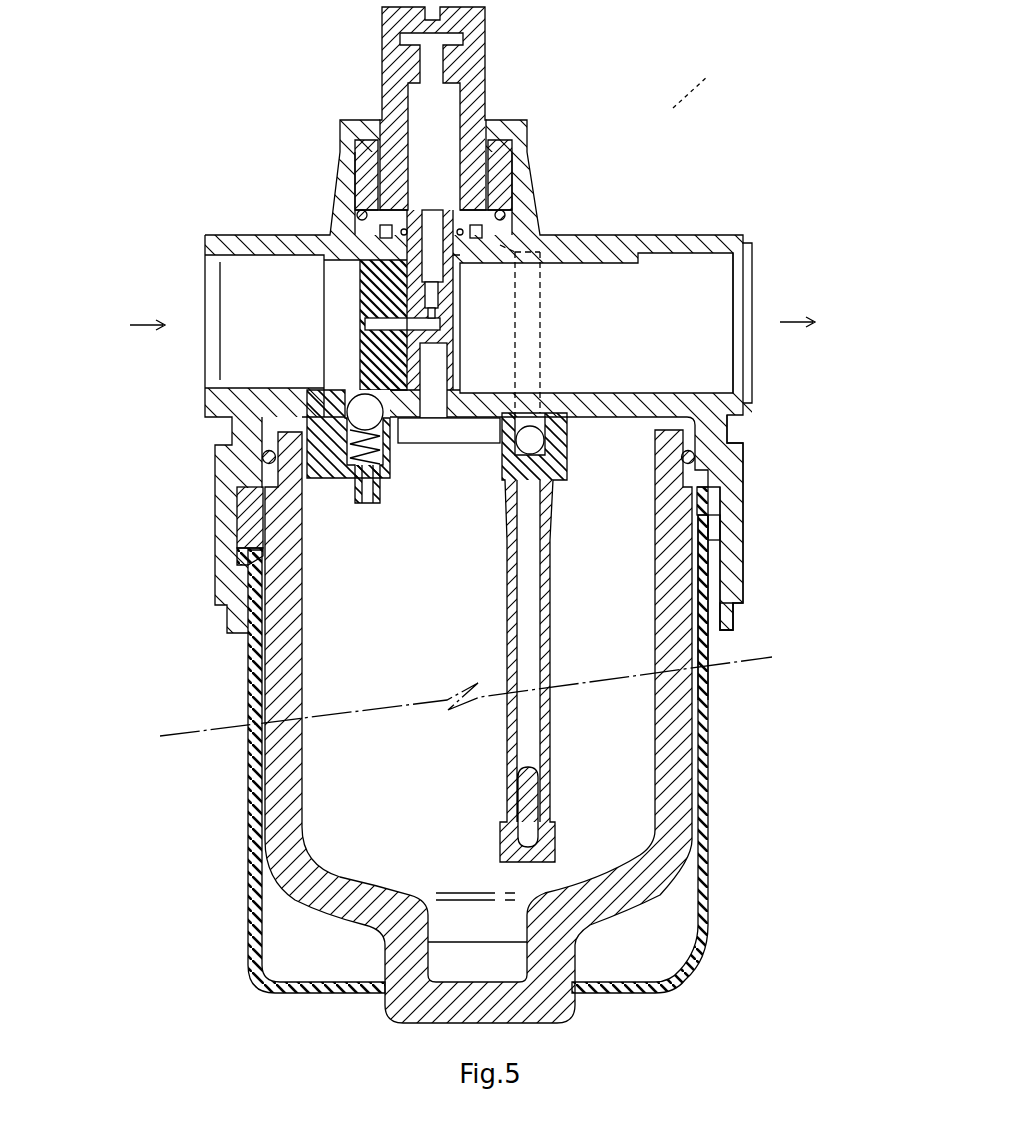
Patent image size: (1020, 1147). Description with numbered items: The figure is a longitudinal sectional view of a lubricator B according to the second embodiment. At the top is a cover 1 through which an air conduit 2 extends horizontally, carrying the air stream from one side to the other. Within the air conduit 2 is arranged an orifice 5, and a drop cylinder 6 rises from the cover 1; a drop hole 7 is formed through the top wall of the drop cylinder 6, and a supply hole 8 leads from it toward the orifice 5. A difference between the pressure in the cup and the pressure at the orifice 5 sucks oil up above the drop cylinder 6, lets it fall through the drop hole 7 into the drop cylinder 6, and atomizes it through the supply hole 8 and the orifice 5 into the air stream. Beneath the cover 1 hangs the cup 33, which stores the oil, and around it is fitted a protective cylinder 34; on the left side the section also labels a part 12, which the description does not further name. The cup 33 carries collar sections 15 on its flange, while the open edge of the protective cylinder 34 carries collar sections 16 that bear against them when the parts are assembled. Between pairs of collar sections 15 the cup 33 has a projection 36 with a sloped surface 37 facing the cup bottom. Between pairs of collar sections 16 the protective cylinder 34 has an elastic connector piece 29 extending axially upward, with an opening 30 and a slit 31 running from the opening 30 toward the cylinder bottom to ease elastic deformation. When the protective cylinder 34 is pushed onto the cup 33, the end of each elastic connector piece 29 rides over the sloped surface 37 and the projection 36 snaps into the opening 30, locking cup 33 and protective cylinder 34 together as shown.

The cover 1 is at (664, 214).
The air conduit 2 is at (594, 266).
The orifice 5 is at (440, 330).
The drop cylinder 6 is at (485, 97).
The drop hole 7 is at (485, 58).
The supply hole 8 is at (500, 255).
The bowl guard 12 is at (245, 597).
The collar sections 15 is at (243, 513).
The collar sections 16 is at (240, 555).
The elastic connector piece 29 is at (707, 502).
The opening 30 is at (700, 560).
The slit 31 is at (735, 622).
The cup 33 is at (712, 775).
The protective cylinder 34 is at (702, 872).
The projection 36 is at (710, 523).
The sloped surface 37 is at (712, 535).
The lubricator B is at (702, 84).